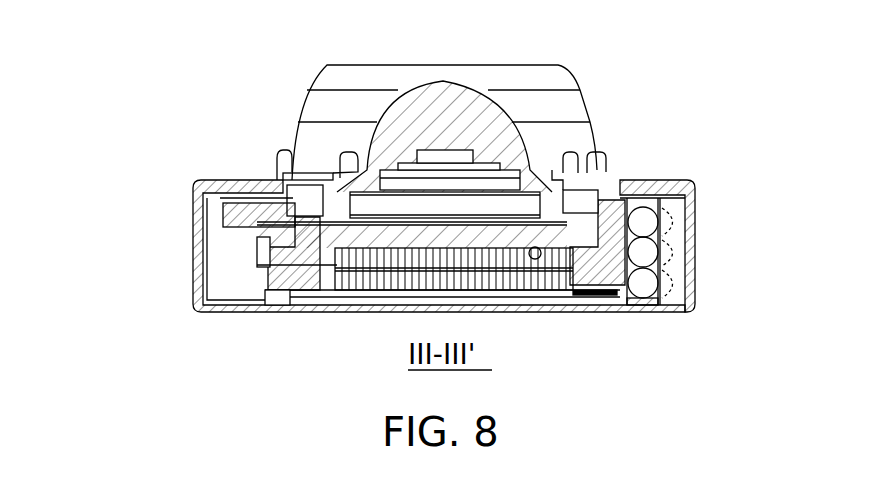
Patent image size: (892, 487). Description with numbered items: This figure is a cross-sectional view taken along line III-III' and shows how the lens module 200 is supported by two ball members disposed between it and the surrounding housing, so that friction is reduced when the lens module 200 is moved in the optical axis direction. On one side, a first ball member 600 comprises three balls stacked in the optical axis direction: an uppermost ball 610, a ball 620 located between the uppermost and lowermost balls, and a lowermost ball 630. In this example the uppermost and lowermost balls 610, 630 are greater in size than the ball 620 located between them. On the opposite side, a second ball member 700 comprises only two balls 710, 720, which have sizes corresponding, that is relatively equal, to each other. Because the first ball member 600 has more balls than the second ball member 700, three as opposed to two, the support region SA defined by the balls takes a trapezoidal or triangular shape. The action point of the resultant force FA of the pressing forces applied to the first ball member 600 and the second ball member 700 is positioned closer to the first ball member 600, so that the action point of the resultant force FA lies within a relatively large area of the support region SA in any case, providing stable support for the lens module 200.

The lens module 200 is at (530, 72).
The second ball member 700 is at (188, 249).
The ball of the second ball member 710 is at (196, 217).
The ball of the second ball member 720 is at (257, 240).
The first ball member 600 is at (729, 246).
The uppermost ball 610 is at (695, 222).
The ball located between the uppermost and lowermost balls 620 is at (660, 252).
The lowermost ball 630 is at (678, 286).
The action point of resultant force FA is at (534, 260).
The support region SA is at (578, 296).